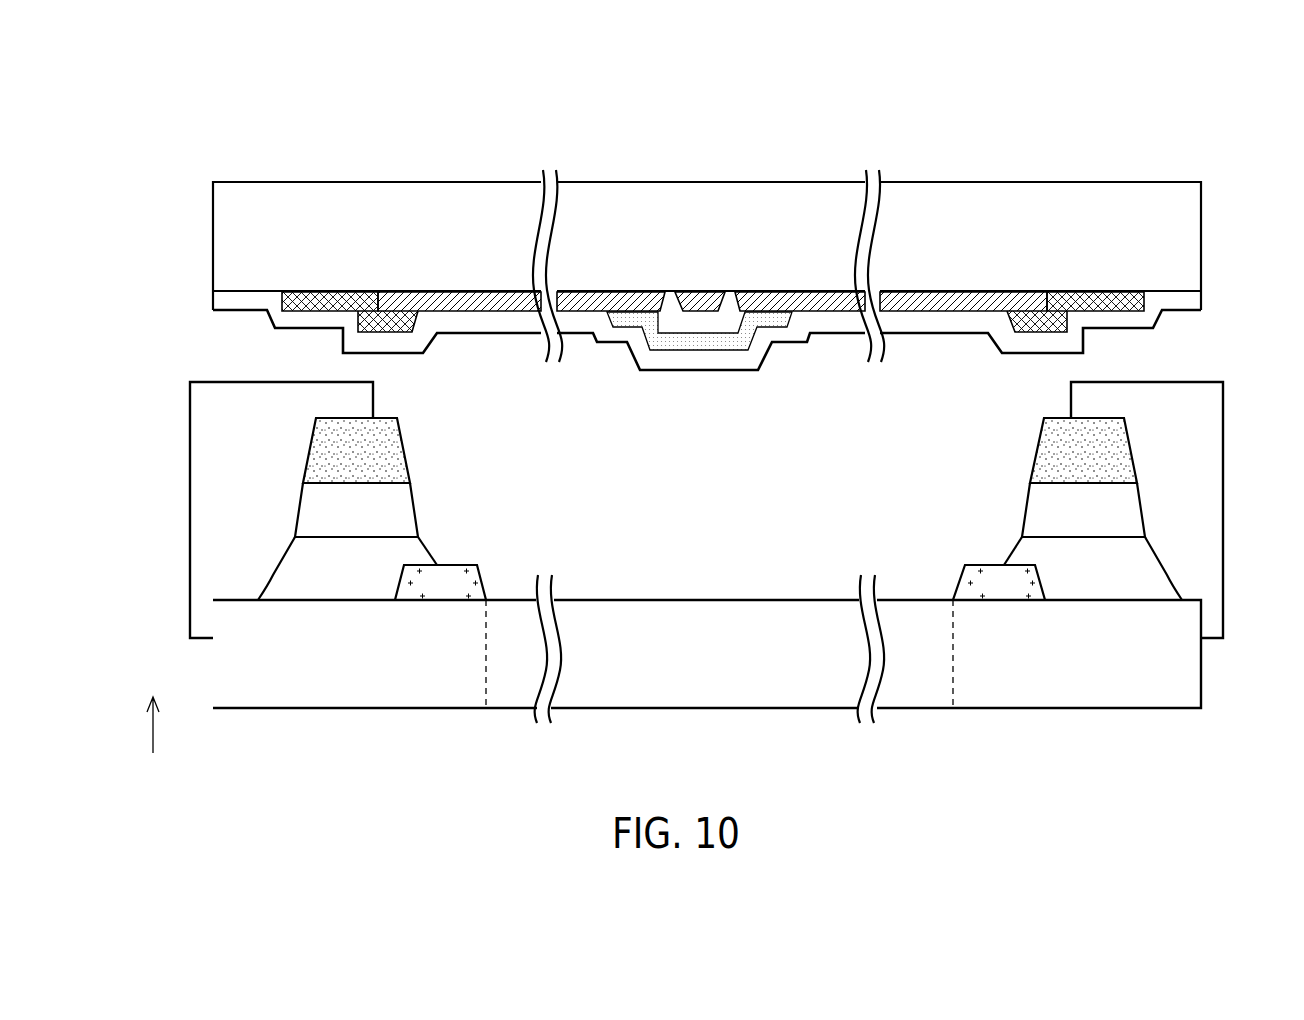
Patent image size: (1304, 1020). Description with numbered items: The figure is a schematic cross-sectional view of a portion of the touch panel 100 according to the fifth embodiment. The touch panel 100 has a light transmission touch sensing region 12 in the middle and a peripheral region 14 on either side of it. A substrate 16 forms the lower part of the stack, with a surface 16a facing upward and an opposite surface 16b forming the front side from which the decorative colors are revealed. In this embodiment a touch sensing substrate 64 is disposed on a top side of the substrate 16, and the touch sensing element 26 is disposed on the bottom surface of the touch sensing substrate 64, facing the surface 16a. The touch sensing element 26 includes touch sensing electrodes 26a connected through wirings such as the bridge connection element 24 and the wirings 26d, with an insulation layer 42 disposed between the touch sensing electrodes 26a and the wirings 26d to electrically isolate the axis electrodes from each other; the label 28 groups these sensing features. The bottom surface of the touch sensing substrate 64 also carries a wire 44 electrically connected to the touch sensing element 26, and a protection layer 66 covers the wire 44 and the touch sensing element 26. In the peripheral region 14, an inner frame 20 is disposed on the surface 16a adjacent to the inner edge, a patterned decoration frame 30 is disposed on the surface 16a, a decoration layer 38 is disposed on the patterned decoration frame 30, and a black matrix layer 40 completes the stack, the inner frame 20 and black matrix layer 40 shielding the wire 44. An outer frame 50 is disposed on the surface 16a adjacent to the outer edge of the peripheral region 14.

The touch panel 100 is at (1178, 147).
The light transmission touch sensing region 12 is at (947, 720).
The peripheral region 14 is at (483, 720).
The substrate 16 is at (1068, 660).
The surface of substrate 16a is at (1158, 600).
The surface of substrate 16b is at (1160, 707).
The inner frame 20 is at (431, 597).
The bridge connection element 24 is at (703, 342).
The touch sensing element 26 is at (712, 395).
The touch sensing electrode 26a is at (825, 302).
The wiring 26d is at (710, 302).
The conductive pad 28 is at (793, 427).
The patterned decoration frame 30 is at (357, 585).
The decoration layer 38 is at (369, 525).
The black matrix layer 40 is at (371, 463).
The insulation layer 42 is at (663, 323).
The wire 44 is at (1030, 327).
The outer frame 50 is at (257, 493).
The touch sensing substrate 64 is at (1093, 261).
The dielectric layer 66 is at (1173, 302).